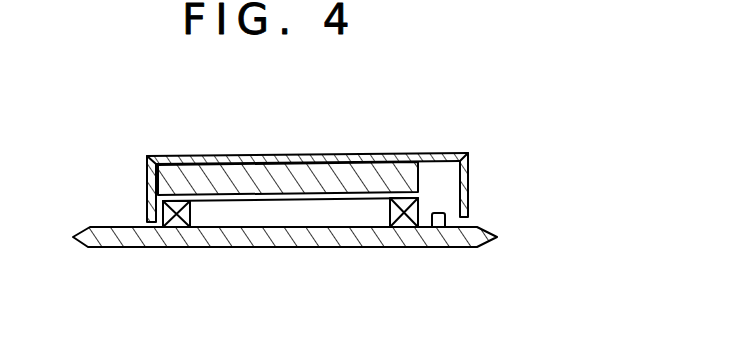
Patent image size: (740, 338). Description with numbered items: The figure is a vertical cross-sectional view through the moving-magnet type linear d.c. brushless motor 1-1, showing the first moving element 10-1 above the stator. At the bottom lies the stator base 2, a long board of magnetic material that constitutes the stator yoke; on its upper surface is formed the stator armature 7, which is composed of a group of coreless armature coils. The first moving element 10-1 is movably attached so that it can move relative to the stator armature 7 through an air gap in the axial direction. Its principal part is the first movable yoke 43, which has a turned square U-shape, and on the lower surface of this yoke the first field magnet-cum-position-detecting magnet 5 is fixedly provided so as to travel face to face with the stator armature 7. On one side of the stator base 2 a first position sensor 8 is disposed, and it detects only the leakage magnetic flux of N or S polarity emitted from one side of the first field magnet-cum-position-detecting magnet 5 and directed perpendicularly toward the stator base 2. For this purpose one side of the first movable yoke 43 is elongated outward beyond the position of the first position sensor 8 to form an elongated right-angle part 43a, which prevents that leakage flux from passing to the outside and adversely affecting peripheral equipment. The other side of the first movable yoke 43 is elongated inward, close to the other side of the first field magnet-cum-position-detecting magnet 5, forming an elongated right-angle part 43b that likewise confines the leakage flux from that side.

The moving-magnet type linear d.c. brushless motor 1-1 is at (464, 132).
The first moving element 10-1 is at (471, 172).
The first movable yoke 43 is at (318, 156).
The elongated right-angle part 43a is at (468, 197).
The elongated right-angle part 43b is at (147, 195).
The first field magnet-cum-position-detecting magnet 5 is at (373, 172).
The stator armature 7 is at (241, 211).
The first group of position sensors 8 is at (438, 228).
The stator base 2 is at (302, 240).